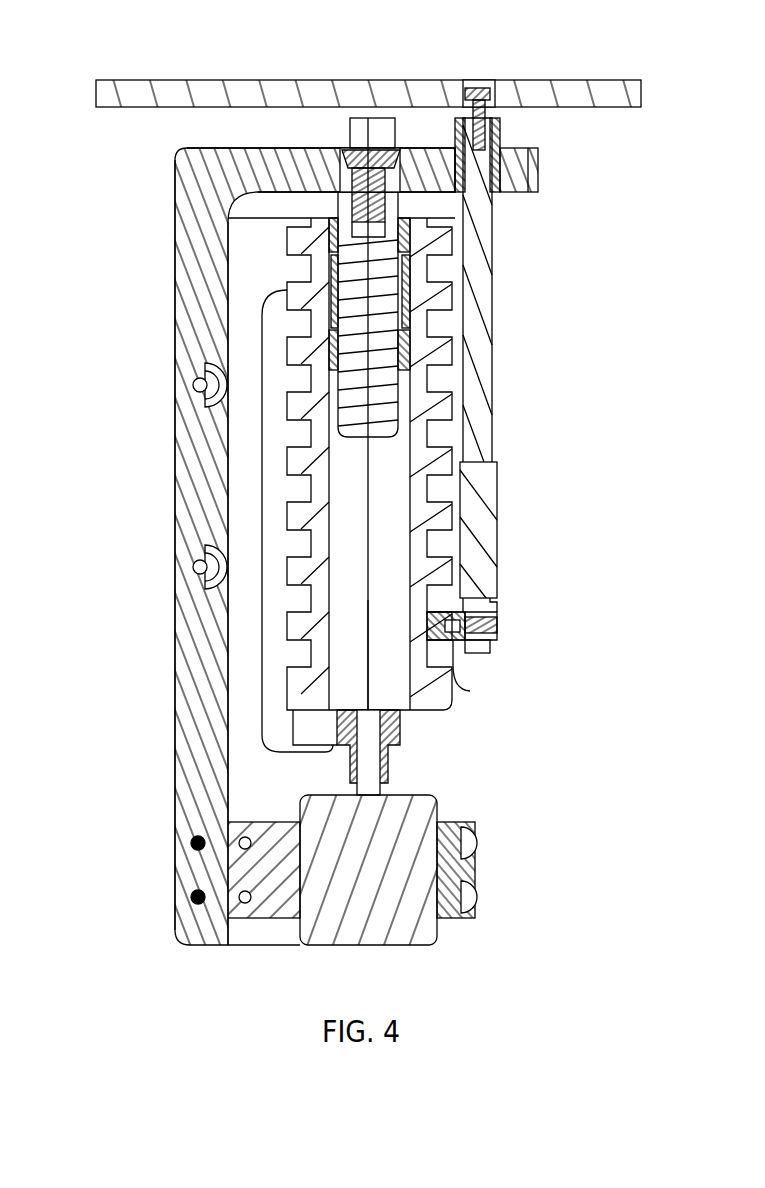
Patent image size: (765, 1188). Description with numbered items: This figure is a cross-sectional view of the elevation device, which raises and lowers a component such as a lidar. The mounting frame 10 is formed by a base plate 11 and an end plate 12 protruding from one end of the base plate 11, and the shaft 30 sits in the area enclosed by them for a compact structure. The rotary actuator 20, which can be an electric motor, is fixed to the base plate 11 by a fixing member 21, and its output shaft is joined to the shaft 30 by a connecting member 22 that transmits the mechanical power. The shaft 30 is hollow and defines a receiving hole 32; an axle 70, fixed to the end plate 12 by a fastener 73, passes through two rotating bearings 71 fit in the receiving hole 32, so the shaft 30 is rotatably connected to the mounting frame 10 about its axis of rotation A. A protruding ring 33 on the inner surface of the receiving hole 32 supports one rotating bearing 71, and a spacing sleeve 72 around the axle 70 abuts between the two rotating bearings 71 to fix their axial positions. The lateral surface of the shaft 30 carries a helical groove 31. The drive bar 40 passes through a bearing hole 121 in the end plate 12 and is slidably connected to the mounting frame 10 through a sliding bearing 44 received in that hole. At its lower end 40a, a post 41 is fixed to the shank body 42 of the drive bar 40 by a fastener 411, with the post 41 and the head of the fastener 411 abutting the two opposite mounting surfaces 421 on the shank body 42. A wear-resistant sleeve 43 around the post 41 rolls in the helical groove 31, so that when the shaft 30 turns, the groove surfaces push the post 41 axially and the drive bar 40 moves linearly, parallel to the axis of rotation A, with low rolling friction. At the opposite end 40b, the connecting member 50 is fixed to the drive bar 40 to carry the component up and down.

The connecting member 50 is at (267, 84).
The fastener 73 is at (398, 153).
The end of the drive bar 40b is at (490, 112).
The sliding bearing 44 is at (503, 143).
The bearing hole 121 is at (540, 165).
The end plate 12 is at (282, 178).
The mounting frame 10 is at (100, 172).
The base plate 11 is at (208, 306).
The rotating bearing 71 is at (352, 278).
The axle 70 is at (368, 262).
The spacing sleeve 72 is at (342, 291).
The drive bar 40 is at (492, 365).
The receiving hole 32 is at (320, 352).
The protruding ring 33 is at (200, 380).
The shank body 42 is at (480, 497).
The shaft 30 is at (298, 517).
The helical groove 31 is at (300, 598).
The end of the drive bar 40a is at (496, 605).
The post 41 is at (499, 618).
The fastener 411 is at (490, 632).
The mounting surfaces 421 is at (468, 653).
The sleeve 43 is at (470, 691).
The axis of rotation A is at (366, 681).
The connecting member 22 is at (400, 732).
The rotary actuator 20 is at (410, 815).
The fixing member 21 is at (268, 872).